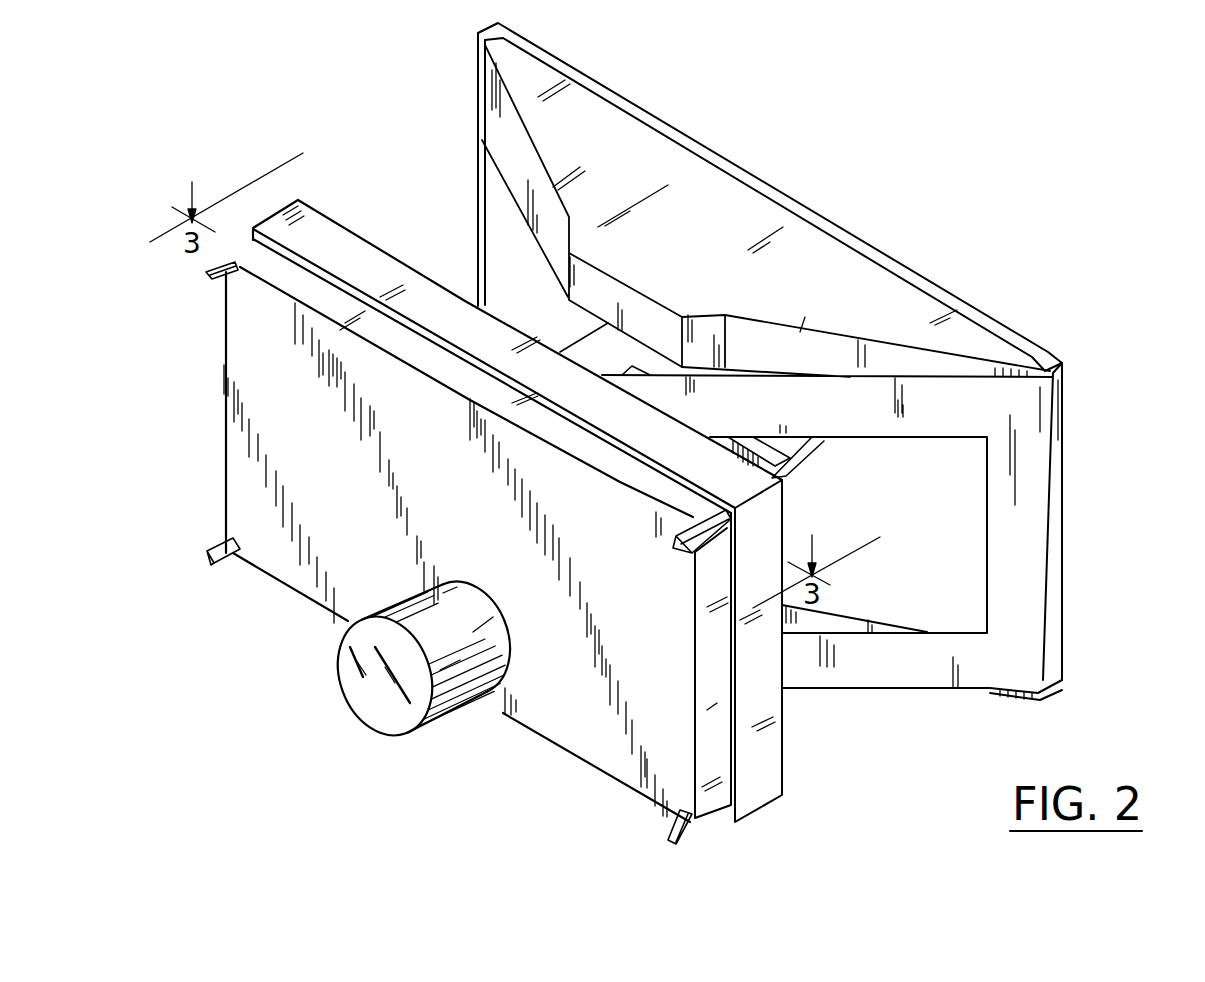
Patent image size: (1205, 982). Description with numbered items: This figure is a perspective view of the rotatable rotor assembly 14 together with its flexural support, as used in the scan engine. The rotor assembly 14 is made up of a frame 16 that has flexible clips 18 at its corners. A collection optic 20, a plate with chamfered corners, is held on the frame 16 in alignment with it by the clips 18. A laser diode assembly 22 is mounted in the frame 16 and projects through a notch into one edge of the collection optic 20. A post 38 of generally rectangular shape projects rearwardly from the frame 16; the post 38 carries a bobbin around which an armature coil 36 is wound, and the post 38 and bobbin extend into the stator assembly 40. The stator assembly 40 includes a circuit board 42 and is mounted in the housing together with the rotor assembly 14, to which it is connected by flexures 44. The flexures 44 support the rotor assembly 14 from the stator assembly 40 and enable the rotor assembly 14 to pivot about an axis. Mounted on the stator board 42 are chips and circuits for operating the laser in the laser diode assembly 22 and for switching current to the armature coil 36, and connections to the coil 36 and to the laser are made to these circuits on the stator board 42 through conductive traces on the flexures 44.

The rotatable (rotor) assembly 14 is at (226, 492).
The frame 16 is at (767, 775).
The flexible clips 18 is at (231, 276).
The collection optic 20 is at (570, 712).
The laser diode assembly 22 is at (478, 622).
The armature coil 36 is at (775, 458).
The post 38 is at (814, 447).
The stator assembly 40 is at (830, 260).
The circuit board (stator board) 42 is at (1003, 325).
The flexures 44 is at (477, 275).